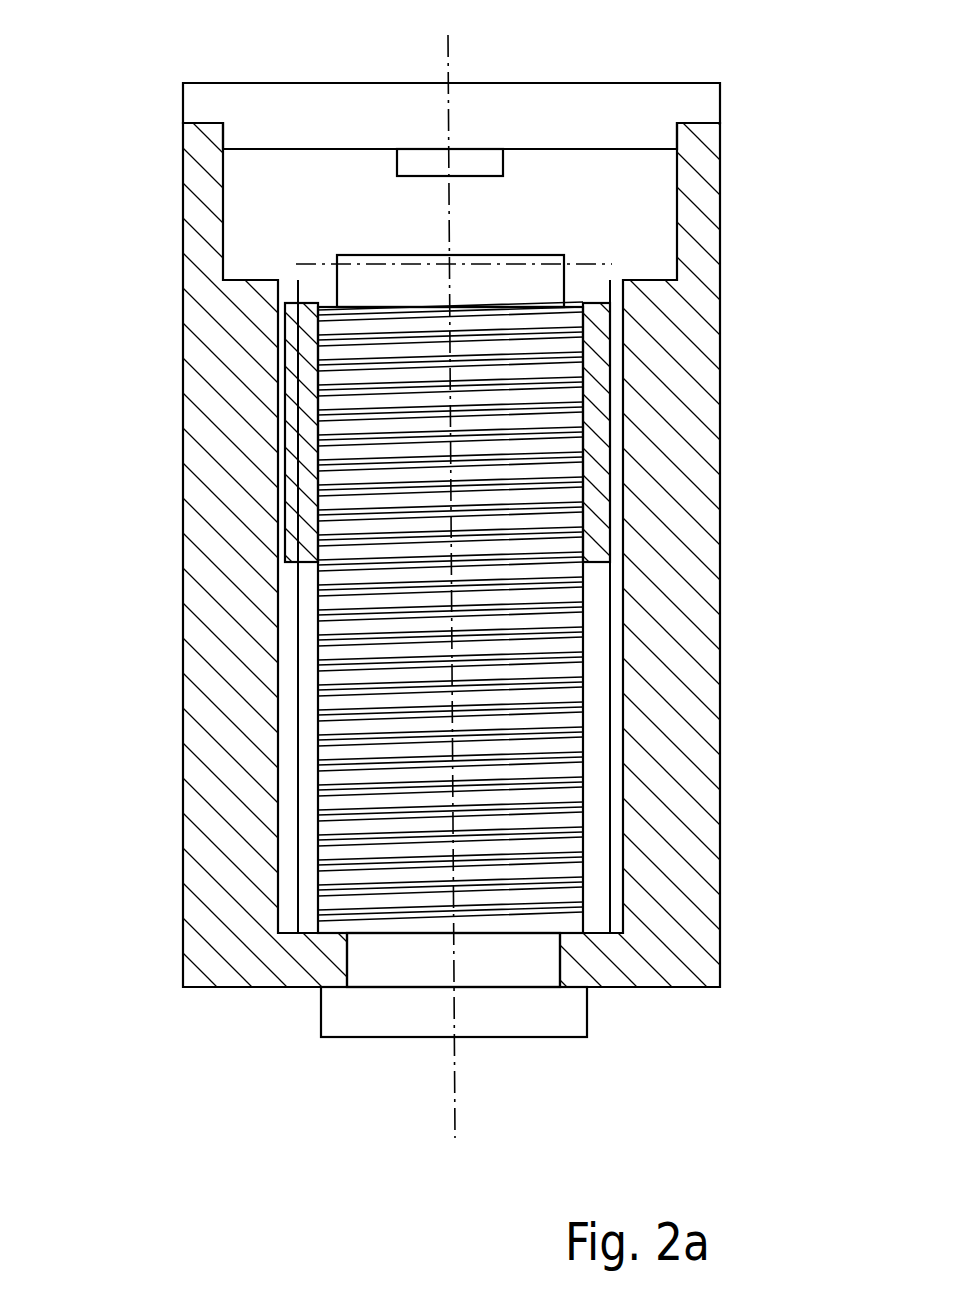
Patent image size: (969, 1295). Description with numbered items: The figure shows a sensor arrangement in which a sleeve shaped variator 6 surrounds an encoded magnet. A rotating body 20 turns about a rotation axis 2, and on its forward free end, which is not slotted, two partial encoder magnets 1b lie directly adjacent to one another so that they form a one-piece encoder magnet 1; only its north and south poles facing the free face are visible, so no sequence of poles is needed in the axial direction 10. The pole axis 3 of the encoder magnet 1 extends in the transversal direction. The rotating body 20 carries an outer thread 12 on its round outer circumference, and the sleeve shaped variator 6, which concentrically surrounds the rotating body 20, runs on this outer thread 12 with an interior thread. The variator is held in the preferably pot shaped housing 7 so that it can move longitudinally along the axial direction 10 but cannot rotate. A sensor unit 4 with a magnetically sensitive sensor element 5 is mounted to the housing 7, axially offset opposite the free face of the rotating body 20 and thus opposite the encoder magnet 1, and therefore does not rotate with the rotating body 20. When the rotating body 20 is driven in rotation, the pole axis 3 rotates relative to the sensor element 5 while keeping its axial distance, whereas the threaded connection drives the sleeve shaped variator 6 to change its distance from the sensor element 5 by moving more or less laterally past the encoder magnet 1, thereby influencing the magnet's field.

The encoder magnet 1 is at (343, 536).
The partial encoder magnet 1b is at (284, 321).
The rotation axis 2 is at (452, 60).
The pole axis 3 is at (573, 263).
The sensor unit 4 is at (320, 85).
The sensor element 5 is at (447, 148).
The sleeve shaped variator 6 is at (282, 465).
The housing 7 is at (680, 723).
The axial direction 10 is at (542, 570).
The outer thread 12 is at (320, 780).
The rotating body 20 is at (454, 984).